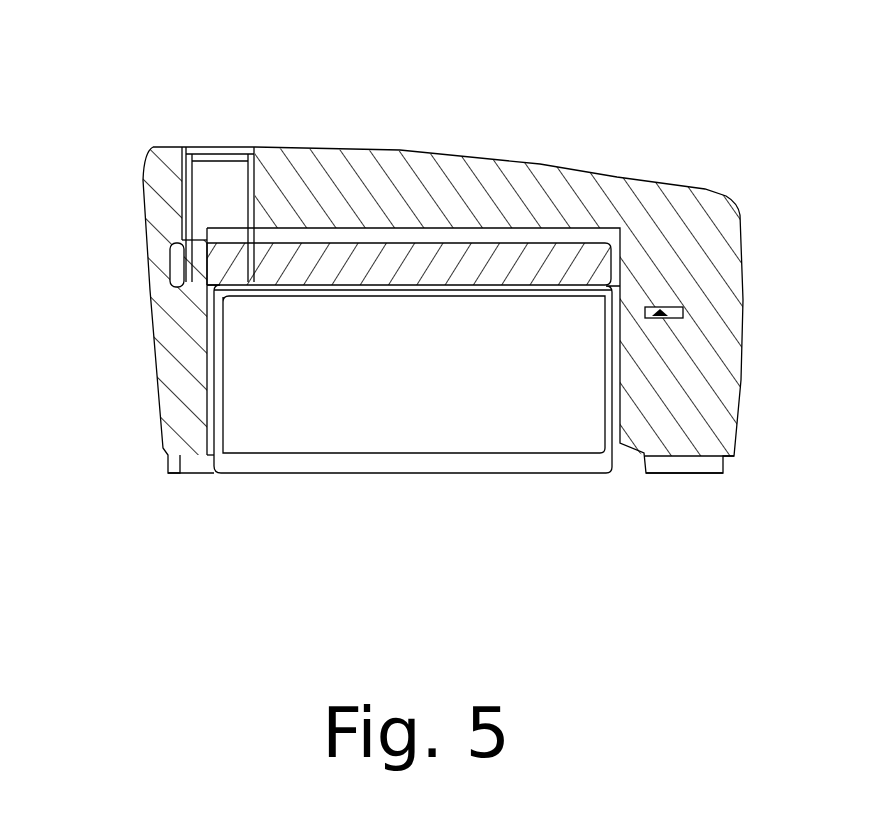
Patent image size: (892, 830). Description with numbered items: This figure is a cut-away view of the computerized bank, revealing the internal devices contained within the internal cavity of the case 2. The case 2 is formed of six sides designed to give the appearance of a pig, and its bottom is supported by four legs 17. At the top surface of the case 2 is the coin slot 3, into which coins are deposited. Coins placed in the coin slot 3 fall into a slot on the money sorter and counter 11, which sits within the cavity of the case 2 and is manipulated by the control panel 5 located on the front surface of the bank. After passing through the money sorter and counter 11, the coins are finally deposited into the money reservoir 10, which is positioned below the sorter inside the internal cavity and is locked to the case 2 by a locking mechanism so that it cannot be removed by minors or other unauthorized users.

The case 2 is at (355, 148).
The coin slot 3 is at (213, 137).
The control panel 5 is at (136, 261).
The money reservoir 10 is at (296, 414).
The money sorter and counter 11 is at (453, 259).
The legs 17 is at (168, 471).